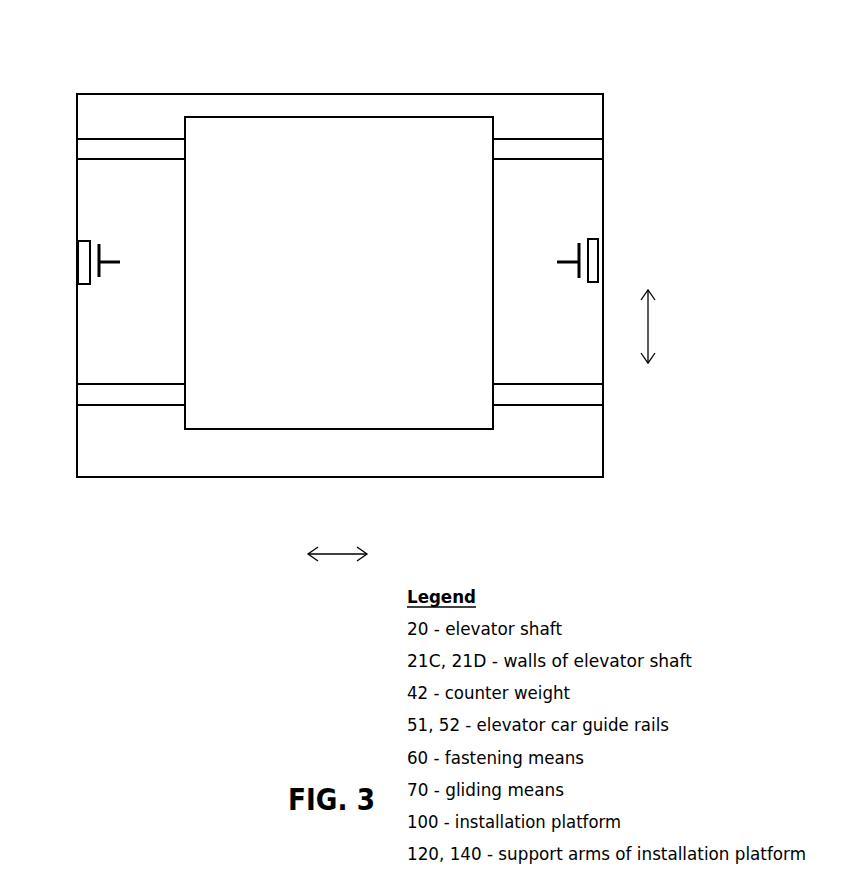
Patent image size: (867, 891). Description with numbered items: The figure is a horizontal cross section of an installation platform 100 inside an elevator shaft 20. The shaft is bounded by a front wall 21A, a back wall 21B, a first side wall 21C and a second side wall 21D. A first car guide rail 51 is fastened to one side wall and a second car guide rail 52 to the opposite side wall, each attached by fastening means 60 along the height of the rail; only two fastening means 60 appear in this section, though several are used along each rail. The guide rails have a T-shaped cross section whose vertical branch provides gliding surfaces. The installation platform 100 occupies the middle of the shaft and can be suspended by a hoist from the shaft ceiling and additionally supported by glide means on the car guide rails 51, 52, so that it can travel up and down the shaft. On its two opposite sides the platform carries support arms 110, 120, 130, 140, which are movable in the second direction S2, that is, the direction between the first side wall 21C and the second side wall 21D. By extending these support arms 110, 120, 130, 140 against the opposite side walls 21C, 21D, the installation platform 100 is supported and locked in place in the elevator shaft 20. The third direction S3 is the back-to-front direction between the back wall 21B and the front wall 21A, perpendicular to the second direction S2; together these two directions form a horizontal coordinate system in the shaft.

The elevator shaft 20 is at (350, 464).
The front wall 21A is at (495, 477).
The back wall 21B is at (492, 94).
The first side wall 21C is at (75, 199).
The second side wall 21D is at (605, 203).
The car guide rail 51 is at (113, 253).
The car guide rail 52 is at (568, 250).
The fastening means 60 is at (83, 262).
The installation platform 100 is at (359, 272).
The support arm 110 is at (83, 394).
The support arm 120 is at (83, 150).
The support arm 130 is at (603, 396).
The support arm 140 is at (597, 148).
The second direction S2 is at (339, 554).
The third direction S3 is at (648, 329).